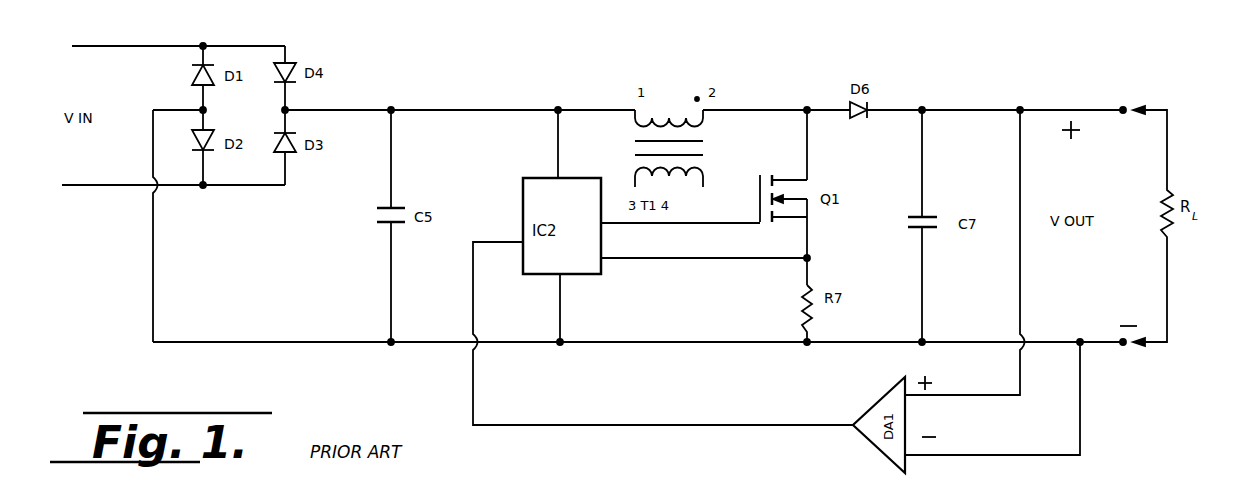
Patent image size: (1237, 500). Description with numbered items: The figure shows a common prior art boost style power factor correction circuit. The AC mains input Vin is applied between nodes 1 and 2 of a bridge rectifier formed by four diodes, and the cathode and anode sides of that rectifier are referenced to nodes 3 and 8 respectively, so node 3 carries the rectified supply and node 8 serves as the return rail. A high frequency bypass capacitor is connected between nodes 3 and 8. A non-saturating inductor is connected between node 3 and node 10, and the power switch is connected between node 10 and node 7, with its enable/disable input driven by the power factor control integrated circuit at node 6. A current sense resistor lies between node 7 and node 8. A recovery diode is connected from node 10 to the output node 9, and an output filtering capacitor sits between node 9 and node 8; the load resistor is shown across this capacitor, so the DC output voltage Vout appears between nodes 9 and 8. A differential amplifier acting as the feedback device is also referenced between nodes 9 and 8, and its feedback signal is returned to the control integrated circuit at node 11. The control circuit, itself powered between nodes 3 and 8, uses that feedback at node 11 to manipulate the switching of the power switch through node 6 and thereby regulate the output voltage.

The node 1 is at (200, 48).
The node 2 is at (203, 188).
The node 3 is at (391, 108).
The node 6 is at (758, 197).
The node 7 is at (805, 260).
The node 8 is at (390, 343).
The node 9 is at (923, 112).
The node 10 is at (808, 112).
The node 11 is at (473, 294).